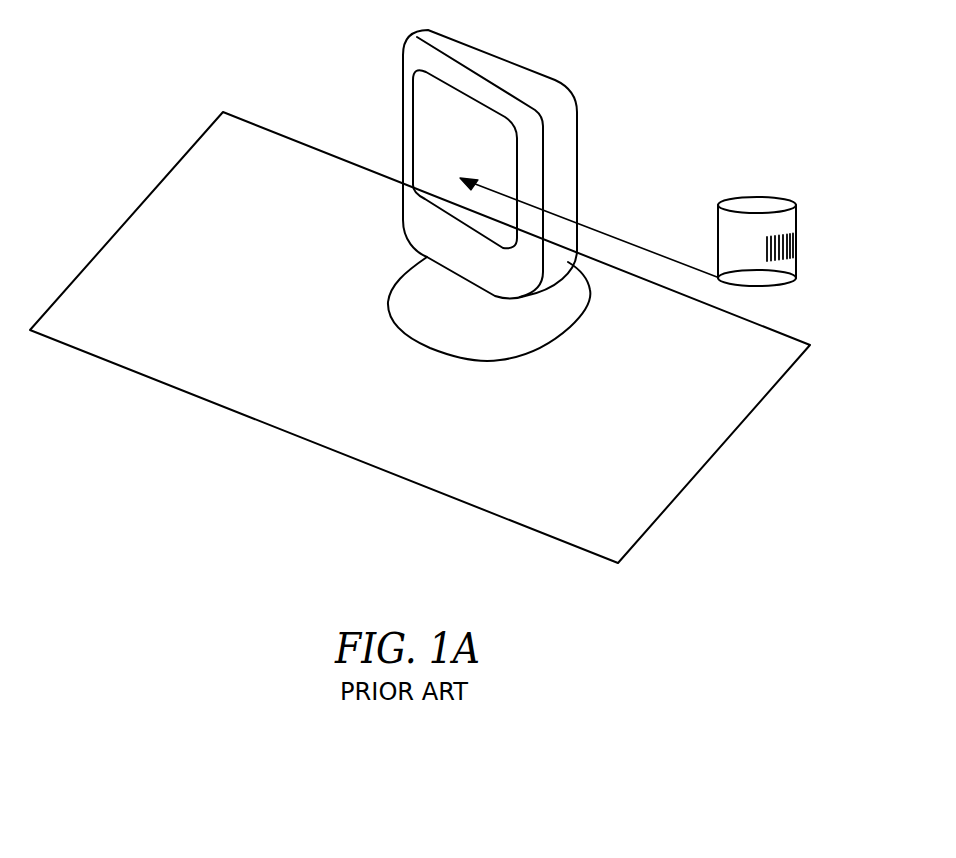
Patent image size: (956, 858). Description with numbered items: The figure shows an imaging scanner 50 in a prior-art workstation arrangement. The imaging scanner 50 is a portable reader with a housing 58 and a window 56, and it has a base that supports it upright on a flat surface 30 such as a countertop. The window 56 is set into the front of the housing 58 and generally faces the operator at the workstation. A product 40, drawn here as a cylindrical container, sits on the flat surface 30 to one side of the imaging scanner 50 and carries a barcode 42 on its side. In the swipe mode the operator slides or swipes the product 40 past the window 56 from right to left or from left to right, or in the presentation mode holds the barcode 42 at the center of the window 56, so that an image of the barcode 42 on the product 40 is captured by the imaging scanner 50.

The flat surface 30 is at (88, 278).
The product 40 is at (779, 219).
The barcode 42 is at (757, 203).
The imaging scanner 50 is at (538, 193).
The window 56 is at (427, 125).
The housing 58 is at (578, 165).